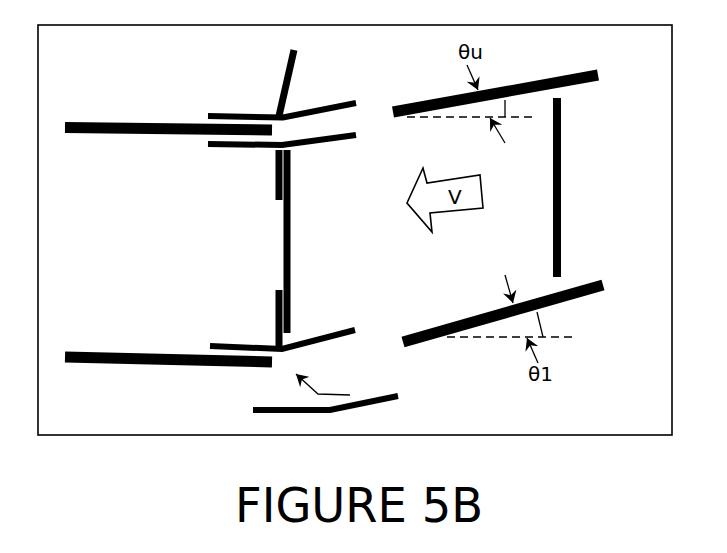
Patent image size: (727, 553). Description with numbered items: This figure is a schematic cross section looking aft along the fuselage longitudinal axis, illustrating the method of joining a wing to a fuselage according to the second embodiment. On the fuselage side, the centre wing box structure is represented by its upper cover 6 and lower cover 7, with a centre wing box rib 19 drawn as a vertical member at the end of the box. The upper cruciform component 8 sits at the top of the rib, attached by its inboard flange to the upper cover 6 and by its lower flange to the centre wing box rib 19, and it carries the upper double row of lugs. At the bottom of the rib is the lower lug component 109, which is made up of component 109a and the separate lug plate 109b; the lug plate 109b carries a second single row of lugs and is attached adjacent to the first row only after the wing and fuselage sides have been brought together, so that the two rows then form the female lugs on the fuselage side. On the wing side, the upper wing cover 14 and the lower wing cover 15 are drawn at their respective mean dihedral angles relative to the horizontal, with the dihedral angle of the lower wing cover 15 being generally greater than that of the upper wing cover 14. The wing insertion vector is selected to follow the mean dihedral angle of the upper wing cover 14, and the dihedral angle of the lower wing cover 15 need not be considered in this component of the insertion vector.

The upper cover 6 is at (128, 133).
The lower cover 7 is at (125, 353).
The cruciform component 8 is at (361, 92).
The upper wing cover 14 is at (580, 85).
The lower wing cover 15 is at (590, 297).
The centre wing box rib 19 is at (284, 233).
The component 109 is at (348, 352).
The component 109a is at (322, 334).
The lug plate 109b is at (363, 407).